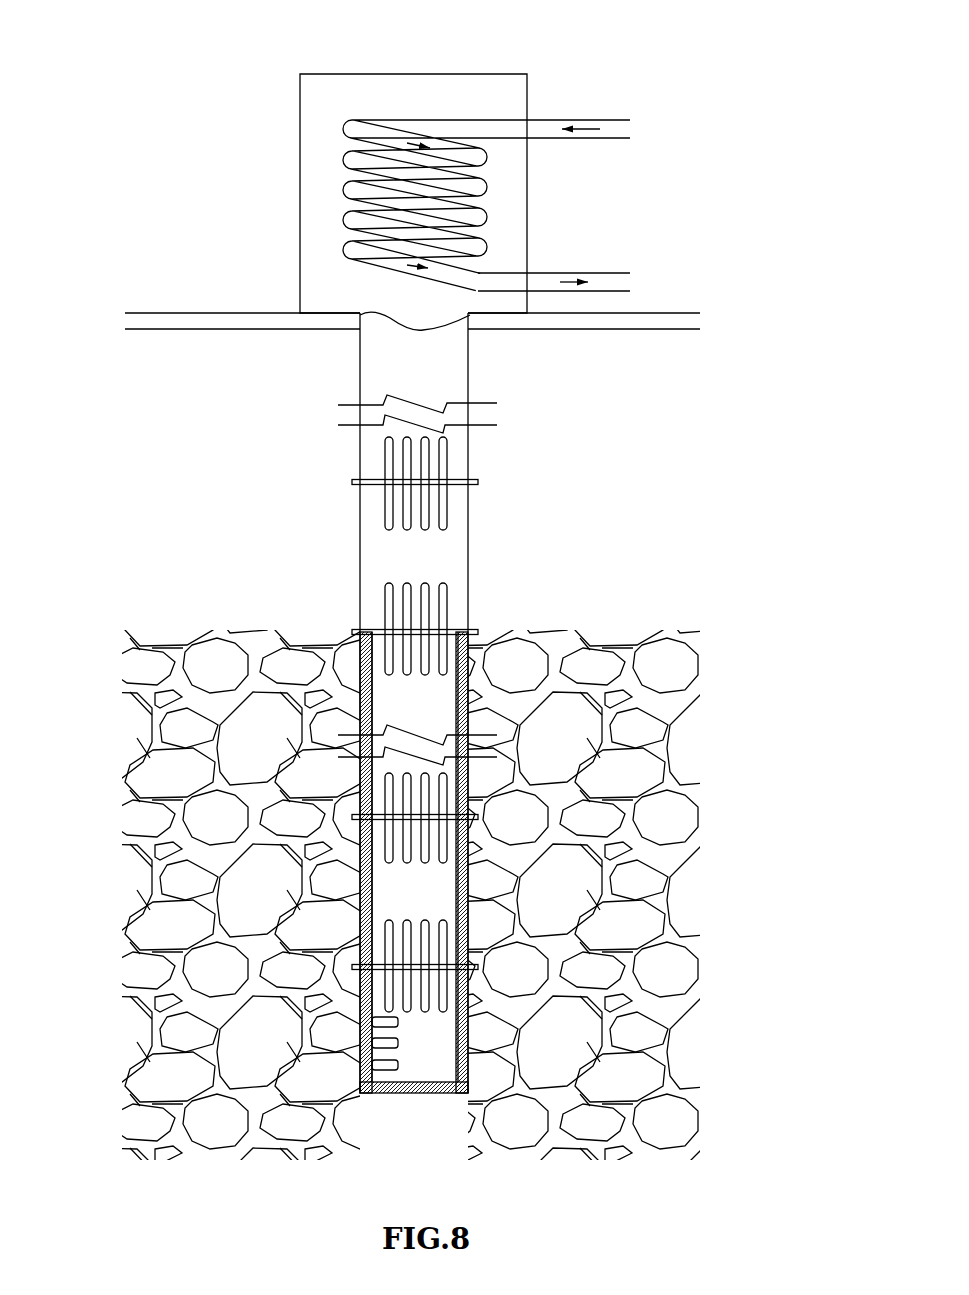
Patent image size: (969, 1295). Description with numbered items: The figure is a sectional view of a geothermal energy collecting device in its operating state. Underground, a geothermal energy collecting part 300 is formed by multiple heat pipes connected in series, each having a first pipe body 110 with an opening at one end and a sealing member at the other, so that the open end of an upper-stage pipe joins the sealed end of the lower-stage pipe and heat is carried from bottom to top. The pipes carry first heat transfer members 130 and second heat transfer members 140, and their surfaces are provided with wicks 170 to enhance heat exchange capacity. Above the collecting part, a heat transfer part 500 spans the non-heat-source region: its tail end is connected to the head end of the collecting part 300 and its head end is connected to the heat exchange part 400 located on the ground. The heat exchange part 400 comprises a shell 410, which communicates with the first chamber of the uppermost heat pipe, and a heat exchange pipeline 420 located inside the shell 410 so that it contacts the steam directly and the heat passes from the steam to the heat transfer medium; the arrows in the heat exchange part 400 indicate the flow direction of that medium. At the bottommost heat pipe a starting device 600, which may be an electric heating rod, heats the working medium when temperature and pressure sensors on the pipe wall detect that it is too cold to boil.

The first pipe body 110 is at (472, 875).
The first heat transfer members 130 is at (447, 944).
The second heat transfer members 140 is at (447, 997).
The wicks 170 is at (463, 1028).
The geothermal energy collecting part 300 is at (497, 778).
The heat exchange part 400 is at (489, 167).
The shell 410 is at (460, 72).
The heat exchange pipeline 420 is at (554, 268).
The heat transfer part 500 is at (522, 515).
The starting device 600 is at (367, 1053).